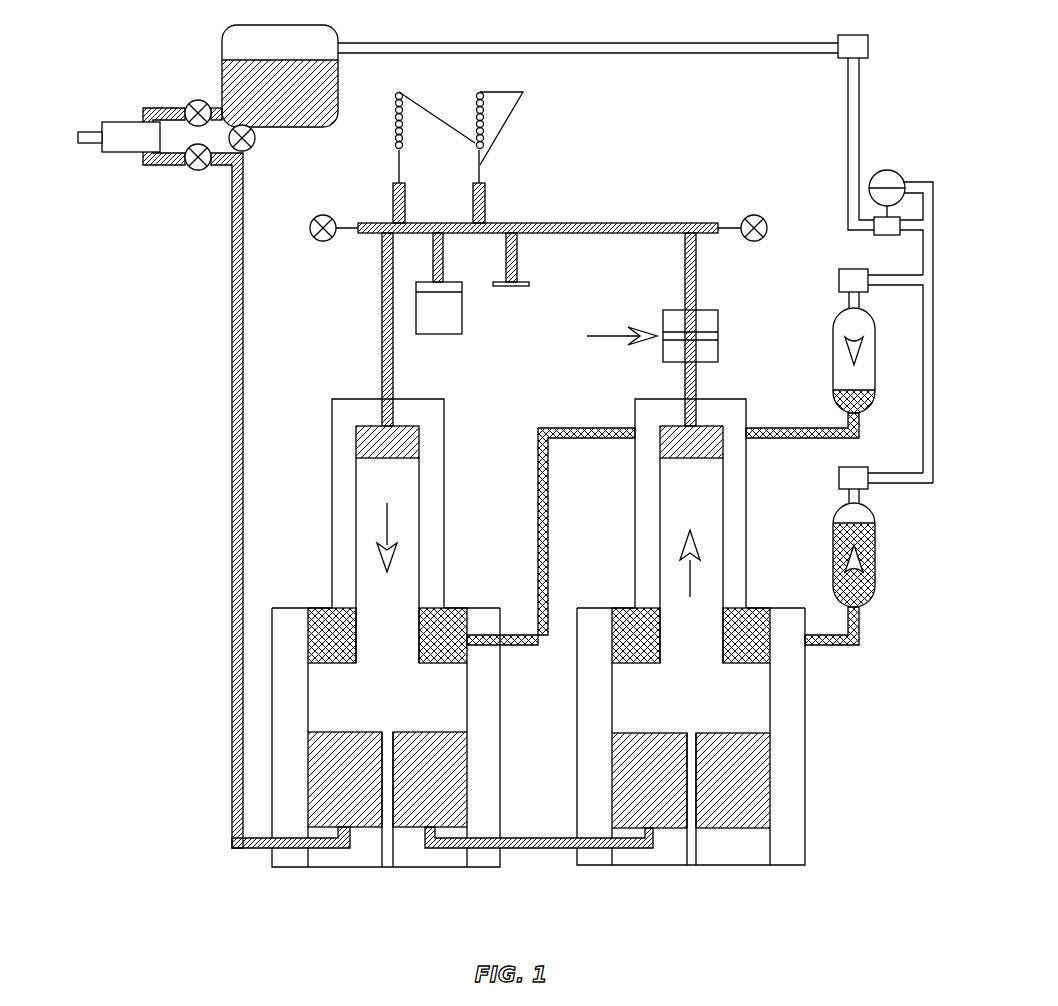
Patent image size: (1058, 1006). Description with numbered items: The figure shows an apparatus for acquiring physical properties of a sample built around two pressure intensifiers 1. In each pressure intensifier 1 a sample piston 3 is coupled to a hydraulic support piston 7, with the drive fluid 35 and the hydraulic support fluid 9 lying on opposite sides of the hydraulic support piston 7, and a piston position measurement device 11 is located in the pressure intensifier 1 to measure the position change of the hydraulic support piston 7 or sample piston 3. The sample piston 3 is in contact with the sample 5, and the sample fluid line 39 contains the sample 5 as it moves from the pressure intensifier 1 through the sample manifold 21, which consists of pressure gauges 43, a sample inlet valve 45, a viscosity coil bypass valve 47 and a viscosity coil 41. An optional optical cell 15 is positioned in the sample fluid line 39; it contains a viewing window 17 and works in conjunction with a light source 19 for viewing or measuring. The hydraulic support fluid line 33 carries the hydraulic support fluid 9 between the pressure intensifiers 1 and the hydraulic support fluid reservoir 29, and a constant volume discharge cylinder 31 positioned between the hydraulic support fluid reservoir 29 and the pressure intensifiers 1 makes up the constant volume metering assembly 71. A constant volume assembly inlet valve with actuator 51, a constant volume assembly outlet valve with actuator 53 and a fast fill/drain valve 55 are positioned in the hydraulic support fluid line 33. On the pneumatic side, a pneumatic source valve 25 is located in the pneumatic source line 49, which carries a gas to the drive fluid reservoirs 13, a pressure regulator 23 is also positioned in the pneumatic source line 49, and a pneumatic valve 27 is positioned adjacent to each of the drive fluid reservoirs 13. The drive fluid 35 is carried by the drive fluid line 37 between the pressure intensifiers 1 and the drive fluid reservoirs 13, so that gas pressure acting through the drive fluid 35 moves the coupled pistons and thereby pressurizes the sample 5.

The pressure intensifier 1 is at (325, 390).
The sample piston 3 is at (407, 488).
The sample 5 is at (362, 442).
The hydraulic support piston 7 is at (323, 703).
The hydraulic support fluid 9 is at (323, 775).
The piston position measurement device 11 is at (387, 850).
The drive fluid reservoir 13 is at (833, 355).
The optical cell 15 is at (708, 310).
The viewing window 17 is at (716, 342).
The light source 19 is at (610, 330).
The sample manifold 21 is at (558, 208).
The pressure regulator 23 is at (887, 170).
The pneumatic source valve 25 is at (870, 46).
The pneumatic valve 27 is at (839, 281).
The hydraulic support fluid reservoir 29 is at (338, 96).
The constant volume discharge cylinder 31 is at (128, 157).
The hydraulic support fluid line 33 is at (232, 342).
The drive fluid 35 is at (322, 617).
The drive fluid line 37 is at (538, 530).
The sample fluid line 39 is at (382, 330).
The viscosity coil 41 is at (500, 133).
The pressure gauge 43 is at (323, 213).
The sample inlet valve 45 is at (513, 286).
The viscosity coil bypass valve 47 is at (440, 334).
The pneumatic source line 49 is at (848, 148).
The constant volume assembly inlet valve with actuator 51 is at (198, 172).
The constant volume assembly outlet valve with actuator 53 is at (190, 101).
The fast fill/drain valve 55 is at (257, 142).
The constant volume metering assembly 71 is at (117, 90).